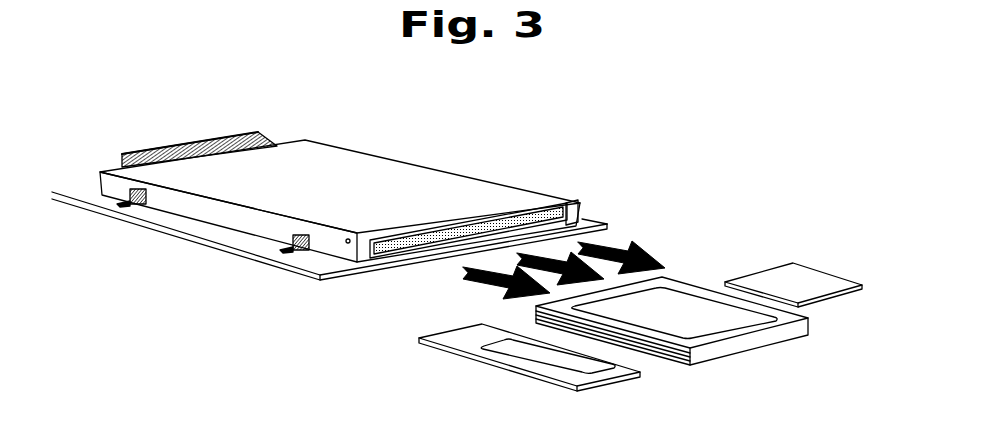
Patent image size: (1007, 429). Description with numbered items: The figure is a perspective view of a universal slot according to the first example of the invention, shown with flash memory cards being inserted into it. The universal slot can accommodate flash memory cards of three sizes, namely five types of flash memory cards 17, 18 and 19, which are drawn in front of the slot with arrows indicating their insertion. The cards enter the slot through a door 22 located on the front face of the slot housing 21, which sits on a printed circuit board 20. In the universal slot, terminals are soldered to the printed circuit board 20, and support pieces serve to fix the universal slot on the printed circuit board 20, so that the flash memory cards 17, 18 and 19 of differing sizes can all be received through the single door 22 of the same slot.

The flash memory card 17 is at (585, 372).
The flash memory card 18 is at (732, 327).
The flash memory card 19 is at (792, 282).
The base plate 20 is at (190, 239).
The housing 21 is at (443, 187).
The door 22 is at (573, 199).